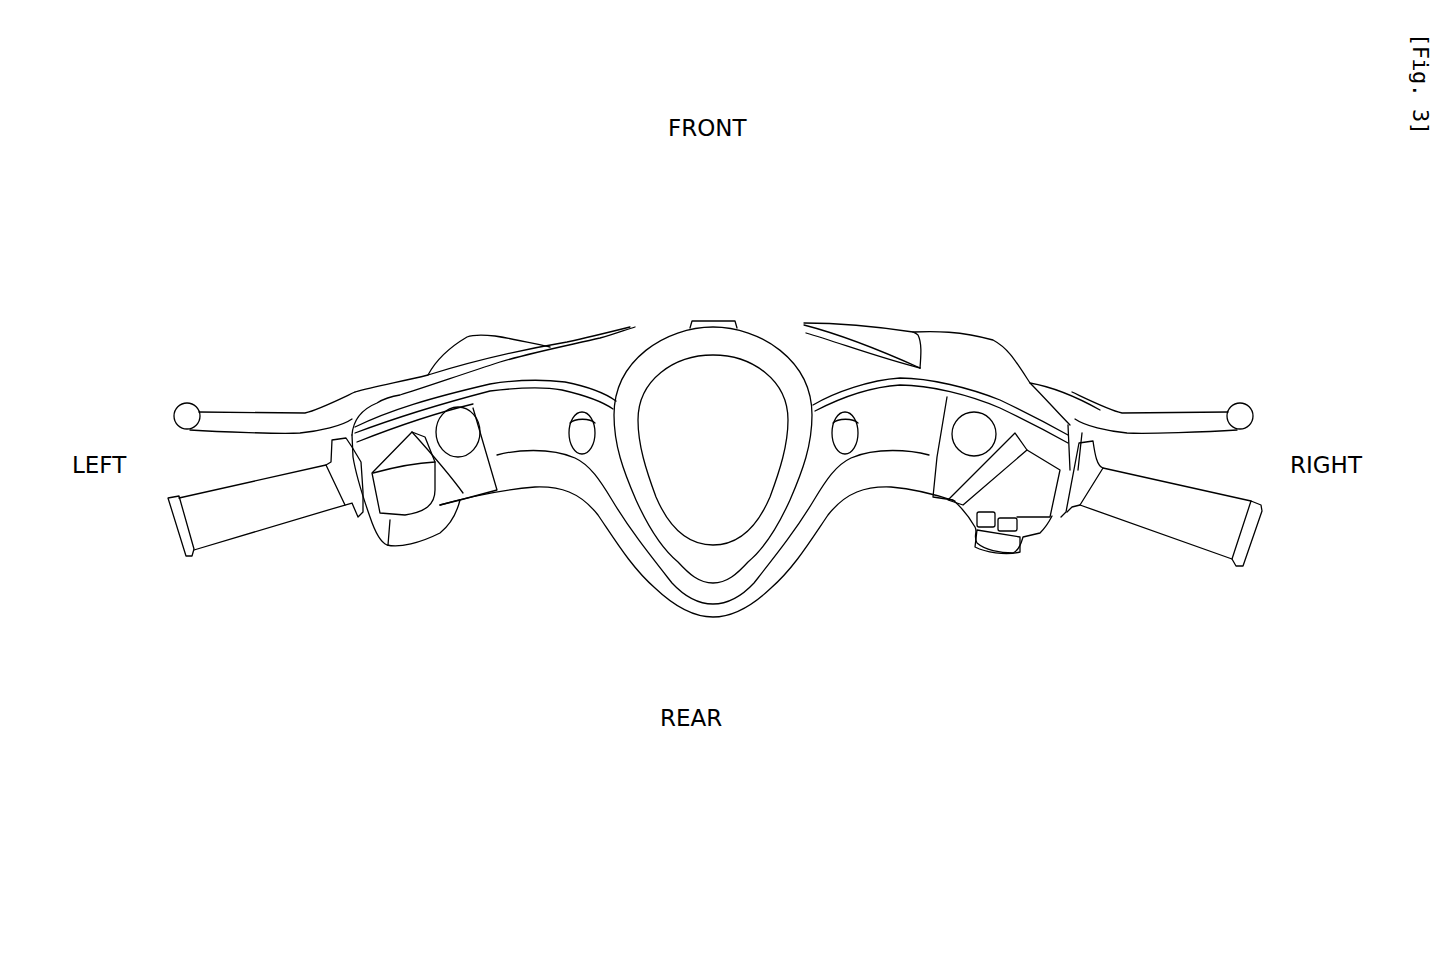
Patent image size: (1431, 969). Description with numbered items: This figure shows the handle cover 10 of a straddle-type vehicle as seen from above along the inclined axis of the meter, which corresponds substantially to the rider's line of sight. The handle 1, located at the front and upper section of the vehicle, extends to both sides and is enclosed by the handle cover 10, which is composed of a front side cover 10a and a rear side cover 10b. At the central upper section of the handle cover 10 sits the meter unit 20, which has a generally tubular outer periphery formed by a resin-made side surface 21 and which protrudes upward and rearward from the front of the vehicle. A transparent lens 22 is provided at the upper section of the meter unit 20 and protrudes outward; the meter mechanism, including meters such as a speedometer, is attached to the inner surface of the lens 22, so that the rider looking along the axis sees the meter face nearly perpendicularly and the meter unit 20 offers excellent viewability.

The handle 1 is at (258, 520).
The handle cover 10 is at (726, 429).
The front side cover 10a is at (566, 363).
The rear side cover 10b is at (532, 473).
The meter unit 20 is at (748, 328).
The side surface 21 is at (650, 363).
The lens 22 is at (688, 380).